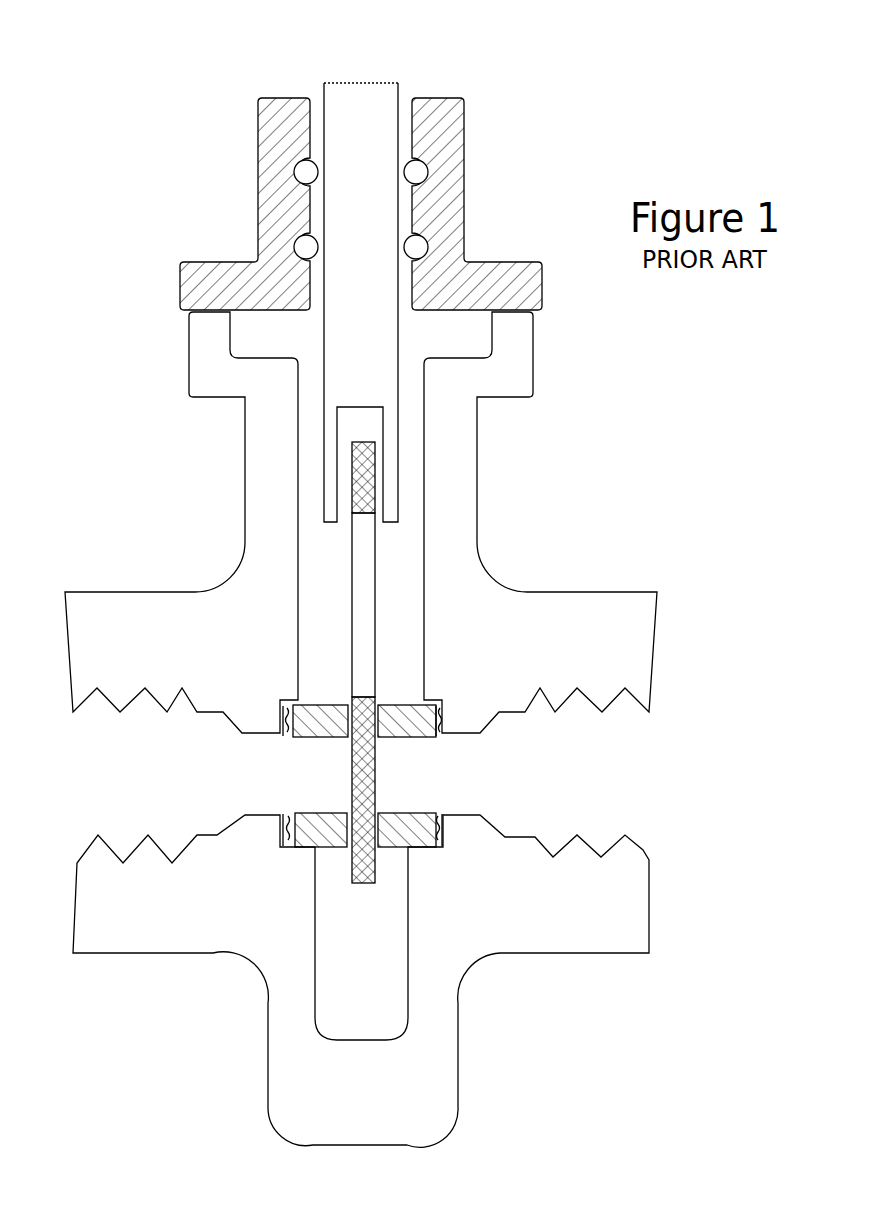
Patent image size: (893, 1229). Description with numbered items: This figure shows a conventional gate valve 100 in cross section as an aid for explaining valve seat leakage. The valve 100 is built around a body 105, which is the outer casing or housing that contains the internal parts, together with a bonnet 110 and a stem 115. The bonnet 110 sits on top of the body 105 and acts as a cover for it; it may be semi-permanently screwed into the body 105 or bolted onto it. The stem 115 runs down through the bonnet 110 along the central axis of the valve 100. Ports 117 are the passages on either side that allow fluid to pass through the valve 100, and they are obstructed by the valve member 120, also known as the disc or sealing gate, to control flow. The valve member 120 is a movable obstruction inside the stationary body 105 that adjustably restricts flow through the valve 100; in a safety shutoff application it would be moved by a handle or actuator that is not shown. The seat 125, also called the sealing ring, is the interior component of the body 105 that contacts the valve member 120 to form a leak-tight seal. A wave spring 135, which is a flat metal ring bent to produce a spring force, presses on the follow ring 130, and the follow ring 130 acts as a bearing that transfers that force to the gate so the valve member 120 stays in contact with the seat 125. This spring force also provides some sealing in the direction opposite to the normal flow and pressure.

The valve 100 is at (152, 475).
The body 105 is at (268, 1058).
The bonnet 110 is at (457, 153).
The stem 115 is at (357, 130).
The ports 117 is at (232, 782).
The valve member 120 is at (373, 787).
The seat 125 is at (445, 835).
The follow ring 130 is at (317, 738).
The wave spring 135 is at (287, 833).